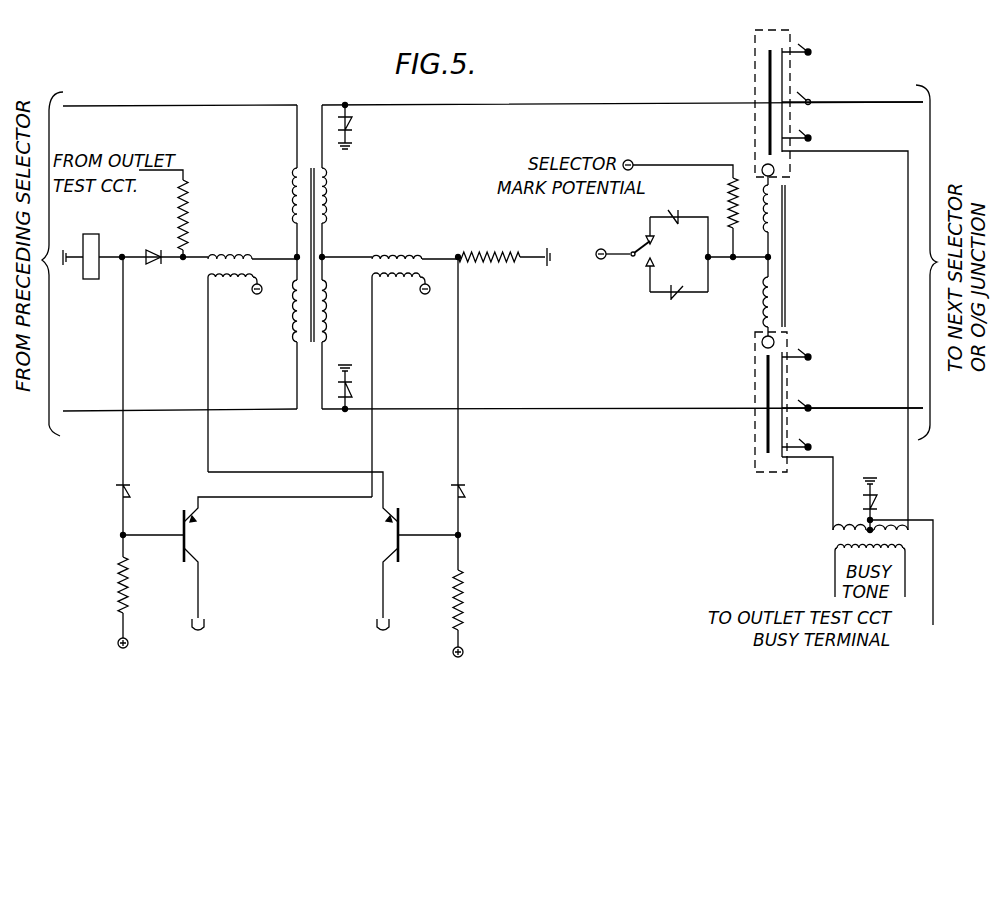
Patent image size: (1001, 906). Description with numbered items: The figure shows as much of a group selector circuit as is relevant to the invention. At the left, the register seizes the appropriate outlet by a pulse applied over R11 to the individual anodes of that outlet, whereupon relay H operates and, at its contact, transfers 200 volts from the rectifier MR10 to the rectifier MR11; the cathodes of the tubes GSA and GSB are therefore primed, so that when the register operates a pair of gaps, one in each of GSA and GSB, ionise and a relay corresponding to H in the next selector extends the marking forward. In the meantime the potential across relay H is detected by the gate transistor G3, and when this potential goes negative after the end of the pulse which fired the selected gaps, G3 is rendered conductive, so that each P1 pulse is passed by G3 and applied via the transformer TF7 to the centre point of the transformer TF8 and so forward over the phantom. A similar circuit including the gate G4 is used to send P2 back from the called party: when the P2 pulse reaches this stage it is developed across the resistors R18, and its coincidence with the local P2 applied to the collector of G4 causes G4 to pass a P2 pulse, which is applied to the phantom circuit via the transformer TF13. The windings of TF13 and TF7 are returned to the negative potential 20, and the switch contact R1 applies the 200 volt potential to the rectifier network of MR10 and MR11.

The relay H is at (91, 268).
The resistor R11 is at (184, 213).
The transformer TF13 is at (229, 350).
The negative potential terminal 20 is at (339, 301).
The transformer TF8 is at (309, 246).
The transformer TF7 is at (398, 362).
The resistors R18 is at (504, 265).
The gate transistor G3 is at (247, 557).
The gate G4 is at (333, 545).
The P1 pulse P1 is at (214, 630).
The P2 pulse P2 is at (392, 631).
The relay contact R1 is at (630, 254).
The 200 volts 200 is at (612, 264).
The rectifier MR10 is at (679, 241).
The rectifier MR11 is at (679, 308).
The tube GSA is at (812, 280).
The tube GSB is at (813, 431).